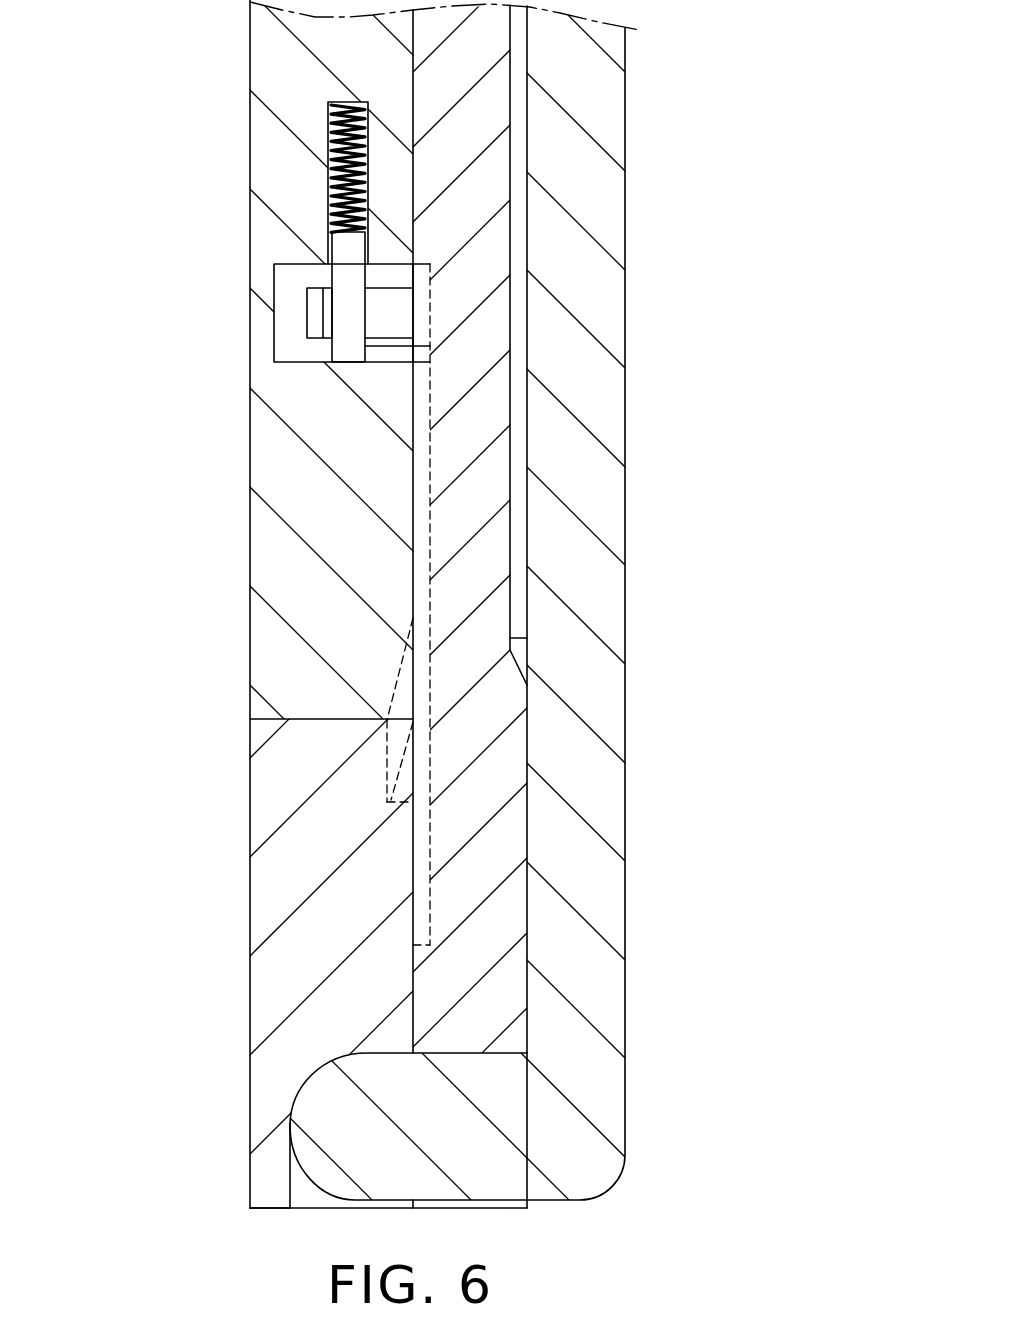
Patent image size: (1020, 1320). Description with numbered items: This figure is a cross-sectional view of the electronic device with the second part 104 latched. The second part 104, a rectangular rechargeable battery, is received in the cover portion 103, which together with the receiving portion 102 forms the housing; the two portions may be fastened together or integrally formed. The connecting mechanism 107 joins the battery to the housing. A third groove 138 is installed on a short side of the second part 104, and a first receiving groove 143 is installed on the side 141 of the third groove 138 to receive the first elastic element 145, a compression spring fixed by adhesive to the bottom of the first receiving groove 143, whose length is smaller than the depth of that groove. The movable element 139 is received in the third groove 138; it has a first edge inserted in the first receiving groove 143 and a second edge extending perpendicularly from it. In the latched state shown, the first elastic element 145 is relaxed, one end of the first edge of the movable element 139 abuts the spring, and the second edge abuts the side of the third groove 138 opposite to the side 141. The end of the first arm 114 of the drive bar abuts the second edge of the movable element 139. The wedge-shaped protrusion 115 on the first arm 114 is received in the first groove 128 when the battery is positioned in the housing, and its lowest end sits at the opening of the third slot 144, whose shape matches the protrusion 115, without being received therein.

The receiving portion 102 is at (473, 792).
The cover portion 103 is at (293, 968).
The second part 104 is at (290, 82).
The connecting mechanism 107 is at (315, 313).
The first arm 114 is at (421, 577).
The protrusion 115 is at (403, 783).
The first groove 128 is at (397, 737).
The third groove 138 is at (307, 350).
The movable element 139 is at (347, 312).
The side 141 is at (325, 263).
The first receiving groove 143 is at (370, 143).
The third slot 144 is at (403, 688).
The first elastic element 145 is at (363, 193).